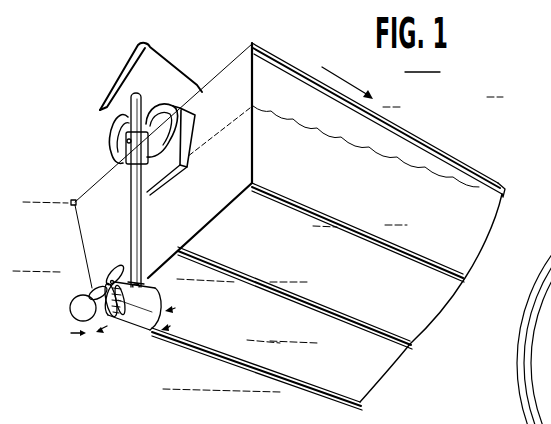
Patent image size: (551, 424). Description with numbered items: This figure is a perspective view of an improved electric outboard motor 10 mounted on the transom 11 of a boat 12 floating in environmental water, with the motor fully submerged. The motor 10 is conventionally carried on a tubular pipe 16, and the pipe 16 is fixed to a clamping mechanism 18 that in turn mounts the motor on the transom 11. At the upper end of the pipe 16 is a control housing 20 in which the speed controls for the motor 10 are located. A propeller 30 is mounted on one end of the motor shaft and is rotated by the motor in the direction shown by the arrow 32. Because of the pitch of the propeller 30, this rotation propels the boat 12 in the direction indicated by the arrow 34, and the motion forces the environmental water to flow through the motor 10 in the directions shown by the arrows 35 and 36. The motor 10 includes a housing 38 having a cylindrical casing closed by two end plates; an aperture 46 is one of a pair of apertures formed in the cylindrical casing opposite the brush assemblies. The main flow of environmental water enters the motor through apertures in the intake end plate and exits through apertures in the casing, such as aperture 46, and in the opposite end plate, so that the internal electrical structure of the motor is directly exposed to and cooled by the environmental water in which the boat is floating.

The electric outboard motor 10 is at (130, 350).
The transom 11 is at (240, 72).
The boat 12 is at (303, 63).
The tubular pipe 16 is at (127, 192).
The clamping mechanism 18 is at (173, 98).
The control housing 20 is at (115, 78).
The propeller 30 is at (80, 310).
The arrow 32 is at (75, 280).
The arrow 34 is at (340, 76).
The arrow 35 is at (168, 328).
The arrow 36 is at (103, 338).
The housing 38 is at (147, 320).
The aperture 46 is at (140, 292).